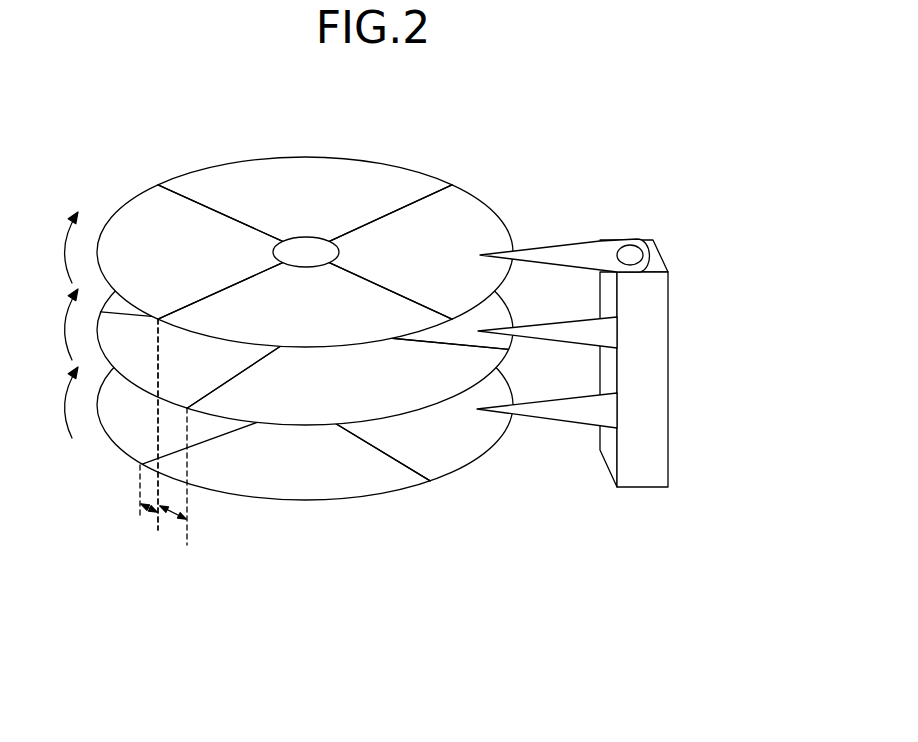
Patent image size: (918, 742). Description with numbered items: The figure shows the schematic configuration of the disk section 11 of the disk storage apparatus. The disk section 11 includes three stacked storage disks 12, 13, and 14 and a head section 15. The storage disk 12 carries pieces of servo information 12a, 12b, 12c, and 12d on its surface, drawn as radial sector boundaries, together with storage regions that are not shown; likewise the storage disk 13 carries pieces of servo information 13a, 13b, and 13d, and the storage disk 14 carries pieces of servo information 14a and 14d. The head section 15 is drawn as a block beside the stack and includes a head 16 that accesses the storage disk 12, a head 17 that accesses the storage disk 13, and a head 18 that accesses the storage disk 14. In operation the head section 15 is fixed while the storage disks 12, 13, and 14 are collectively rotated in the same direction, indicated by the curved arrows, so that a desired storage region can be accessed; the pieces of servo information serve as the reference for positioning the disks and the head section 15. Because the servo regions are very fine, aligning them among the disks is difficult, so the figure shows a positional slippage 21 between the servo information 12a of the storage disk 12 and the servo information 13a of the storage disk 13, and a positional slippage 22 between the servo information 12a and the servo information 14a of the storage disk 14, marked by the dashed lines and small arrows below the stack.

The disk section 11 is at (311, 324).
The storage disk 12 is at (305, 224).
The servo information 12a is at (193, 297).
The servo information 12b is at (242, 213).
The servo information 12c is at (377, 220).
The servo information 12d is at (390, 295).
The storage disk 13 is at (305, 396).
The servo information 13a is at (240, 372).
The servo information 13b is at (115, 313).
The servo information 13d is at (465, 345).
The storage disk 14 is at (305, 442).
The servo information 14a is at (207, 438).
The servo information 14d is at (415, 468).
The head section 15 is at (660, 380).
The head 16 is at (568, 252).
The head 17 is at (545, 328).
The head 18 is at (545, 400).
The positional slippage 21 is at (170, 522).
The positional slippage 22 is at (146, 516).